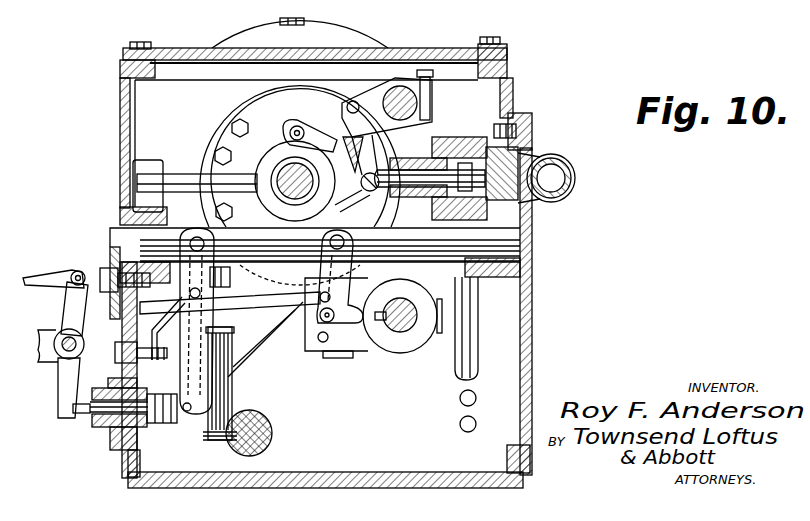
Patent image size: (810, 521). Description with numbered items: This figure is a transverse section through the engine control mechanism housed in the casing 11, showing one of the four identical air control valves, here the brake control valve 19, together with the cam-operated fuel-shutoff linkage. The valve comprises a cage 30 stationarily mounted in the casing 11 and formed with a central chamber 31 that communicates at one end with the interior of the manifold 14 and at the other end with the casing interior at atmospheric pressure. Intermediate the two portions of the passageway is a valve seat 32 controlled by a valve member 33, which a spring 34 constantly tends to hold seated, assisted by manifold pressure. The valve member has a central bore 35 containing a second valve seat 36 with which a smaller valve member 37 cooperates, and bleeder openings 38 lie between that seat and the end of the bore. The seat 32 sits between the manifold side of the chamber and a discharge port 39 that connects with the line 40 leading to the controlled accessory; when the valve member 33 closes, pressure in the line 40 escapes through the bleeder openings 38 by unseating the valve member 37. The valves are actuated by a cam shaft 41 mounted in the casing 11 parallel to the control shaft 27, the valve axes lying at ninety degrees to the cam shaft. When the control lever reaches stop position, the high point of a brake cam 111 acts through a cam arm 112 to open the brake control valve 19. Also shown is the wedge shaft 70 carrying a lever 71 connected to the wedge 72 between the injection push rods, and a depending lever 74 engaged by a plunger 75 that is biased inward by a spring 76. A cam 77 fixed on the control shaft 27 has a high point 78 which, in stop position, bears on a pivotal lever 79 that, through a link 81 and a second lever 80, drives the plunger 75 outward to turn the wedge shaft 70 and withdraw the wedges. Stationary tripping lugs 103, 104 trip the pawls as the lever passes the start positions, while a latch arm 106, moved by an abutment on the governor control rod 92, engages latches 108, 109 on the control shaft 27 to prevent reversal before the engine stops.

The casing 11 is at (512, 82).
The manifold 14 is at (553, 177).
The brake control valve 19 is at (497, 112).
The control shaft 27 is at (410, 329).
The valve cage 30 is at (405, 205).
The central chamber 31 is at (538, 155).
The valve seat 32 is at (475, 133).
The valve member 33 is at (518, 210).
The spring 34 is at (573, 192).
The central bore 35 is at (425, 165).
The valve seat 36 is at (468, 190).
The valve member 37 is at (470, 155).
The bleeder openings 38 is at (517, 228).
The discharge port 39 is at (463, 212).
The line 40 is at (473, 323).
The cam shaft 41 is at (262, 172).
The wedge shaft 70 is at (74, 342).
The lever 71 is at (68, 306).
The wedge 72 is at (43, 273).
The lever 74 is at (65, 388).
The plunger 75 is at (78, 413).
The spring 76 is at (120, 432).
The cam 77 is at (397, 350).
The high point 78 is at (357, 323).
The lever 79 is at (340, 274).
The lever 80 is at (192, 383).
The link 81 is at (243, 303).
The governor control rod 92 is at (262, 427).
The tripping lug 103 is at (253, 110).
The tripping lug 104 is at (217, 197).
The latch arm 106 is at (232, 383).
The latch 108 is at (293, 330).
The latch 109 is at (307, 335).
The brake cam 111 is at (267, 160).
The cam arm 112 is at (337, 120).